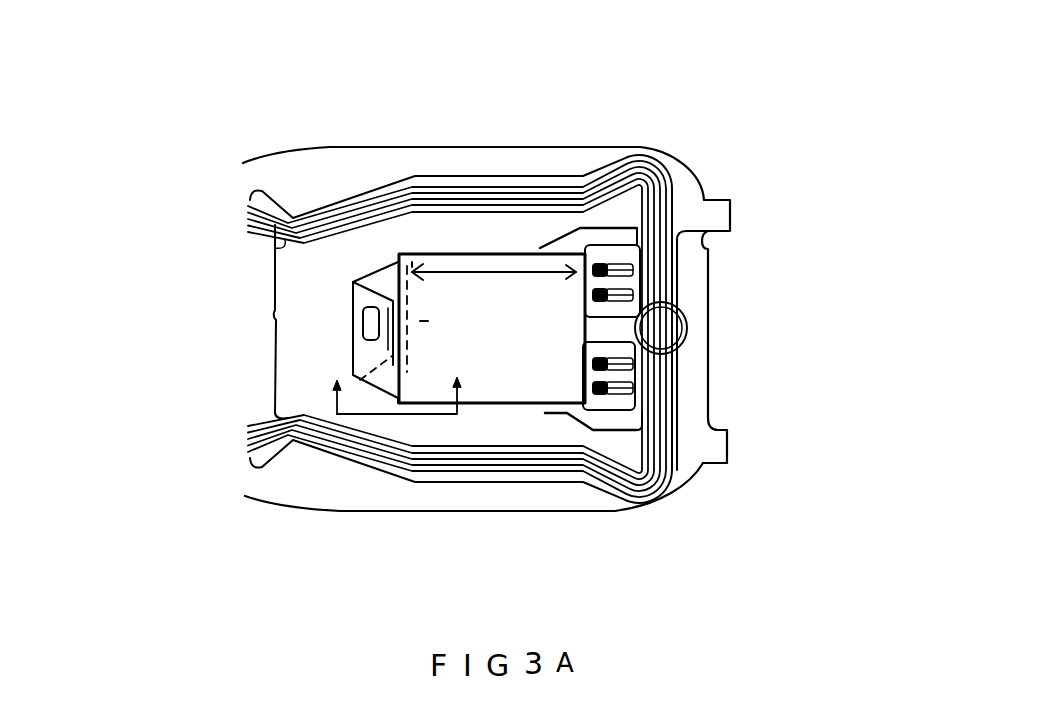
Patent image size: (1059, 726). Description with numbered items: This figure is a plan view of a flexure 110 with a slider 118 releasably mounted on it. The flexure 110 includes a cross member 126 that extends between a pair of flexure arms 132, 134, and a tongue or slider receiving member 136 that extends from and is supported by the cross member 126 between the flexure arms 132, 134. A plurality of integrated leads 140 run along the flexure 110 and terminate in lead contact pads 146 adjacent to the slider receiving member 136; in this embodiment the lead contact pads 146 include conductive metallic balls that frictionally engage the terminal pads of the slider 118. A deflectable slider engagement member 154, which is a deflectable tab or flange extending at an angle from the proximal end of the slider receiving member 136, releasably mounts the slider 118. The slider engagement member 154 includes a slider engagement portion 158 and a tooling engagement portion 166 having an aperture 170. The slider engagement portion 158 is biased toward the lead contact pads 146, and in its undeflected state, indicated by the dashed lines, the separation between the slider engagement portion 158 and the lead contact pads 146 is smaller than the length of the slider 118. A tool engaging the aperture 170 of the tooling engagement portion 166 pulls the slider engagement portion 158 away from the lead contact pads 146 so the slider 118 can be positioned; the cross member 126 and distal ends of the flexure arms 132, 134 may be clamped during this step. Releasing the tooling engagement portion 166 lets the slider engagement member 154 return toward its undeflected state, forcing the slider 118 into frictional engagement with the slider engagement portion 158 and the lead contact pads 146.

The flexure 110 is at (152, 60).
The slider 118 is at (558, 358).
The cross member 126 is at (710, 264).
The flexure arm 132 is at (402, 512).
The flexure arm 134 is at (431, 147).
The slider receiving member 136 is at (498, 258).
The integrated leads 140 is at (635, 152).
The lead contact pads 146 is at (622, 270).
The deflectable slider engagement member 154 is at (375, 405).
The slider engagement portion 158 is at (372, 351).
The tooling engagement portion 166 is at (345, 297).
The aperture 170 is at (368, 324).